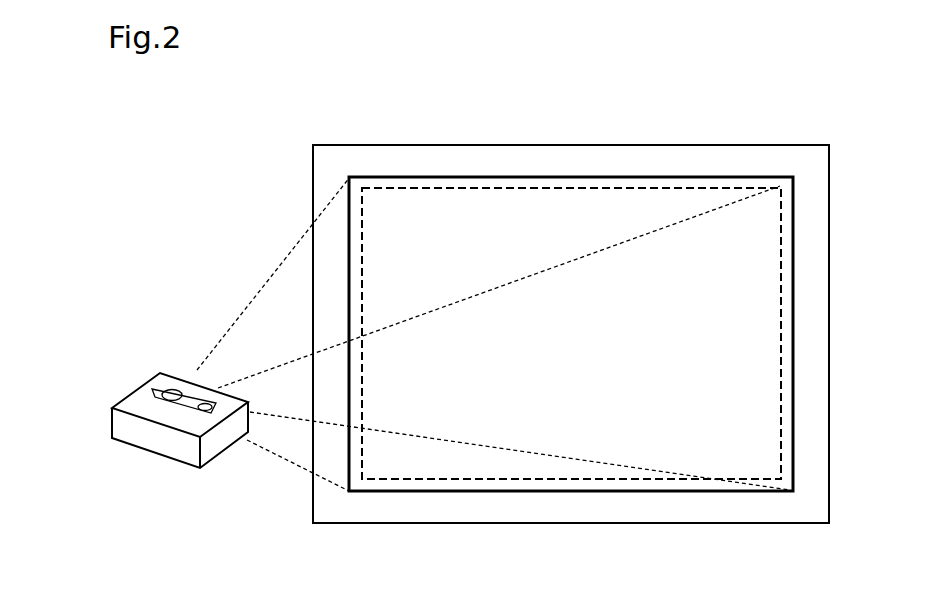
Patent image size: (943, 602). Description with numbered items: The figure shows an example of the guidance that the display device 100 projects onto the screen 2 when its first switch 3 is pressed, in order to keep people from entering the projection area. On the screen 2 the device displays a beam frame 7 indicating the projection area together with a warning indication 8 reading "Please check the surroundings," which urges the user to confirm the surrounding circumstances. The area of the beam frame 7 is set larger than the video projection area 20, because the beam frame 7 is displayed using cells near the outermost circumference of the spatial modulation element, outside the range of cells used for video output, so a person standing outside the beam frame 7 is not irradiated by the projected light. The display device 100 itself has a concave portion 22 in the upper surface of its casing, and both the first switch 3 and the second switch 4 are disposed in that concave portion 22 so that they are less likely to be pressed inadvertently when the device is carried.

The screen 2 is at (395, 162).
The beam frame 7 is at (463, 493).
The video projection area 20 is at (595, 480).
The warning indication 8 is at (655, 317).
The display device 100 is at (167, 443).
The first switch 3 is at (160, 373).
The concave portion 22 is at (188, 398).
The second switch 4 is at (208, 403).